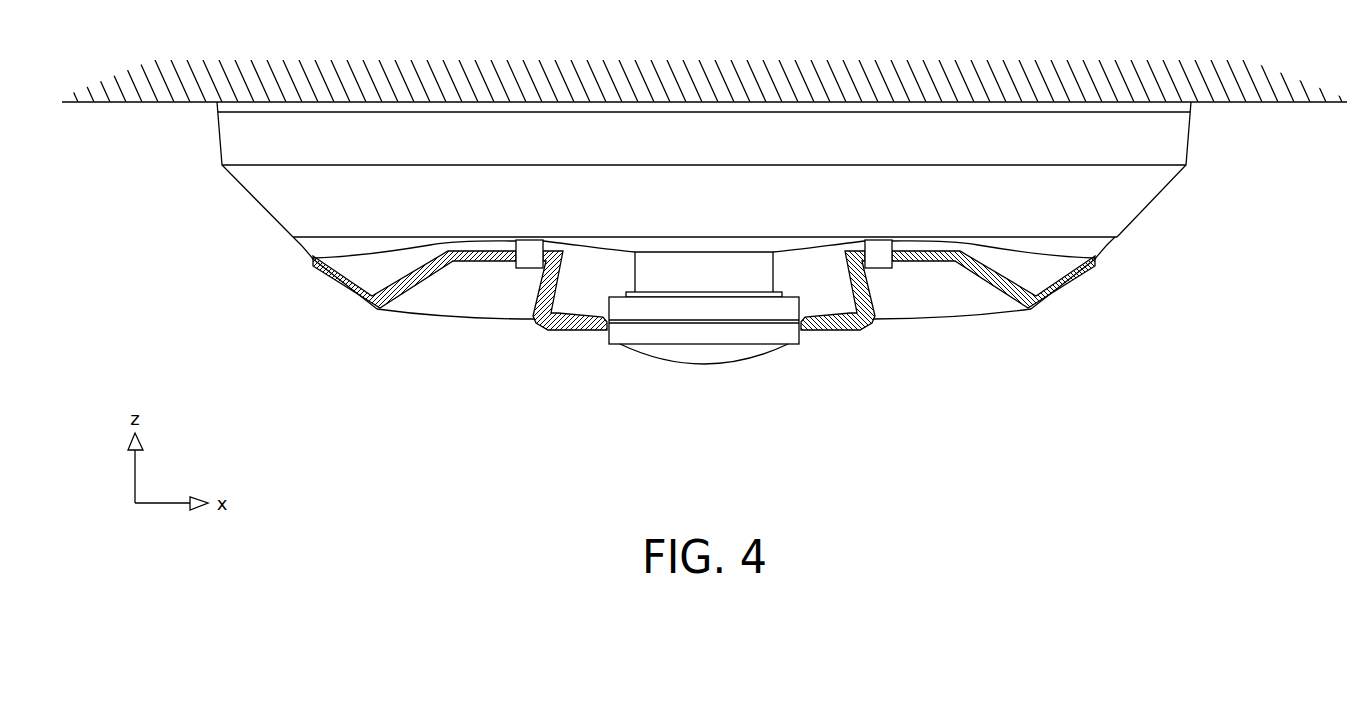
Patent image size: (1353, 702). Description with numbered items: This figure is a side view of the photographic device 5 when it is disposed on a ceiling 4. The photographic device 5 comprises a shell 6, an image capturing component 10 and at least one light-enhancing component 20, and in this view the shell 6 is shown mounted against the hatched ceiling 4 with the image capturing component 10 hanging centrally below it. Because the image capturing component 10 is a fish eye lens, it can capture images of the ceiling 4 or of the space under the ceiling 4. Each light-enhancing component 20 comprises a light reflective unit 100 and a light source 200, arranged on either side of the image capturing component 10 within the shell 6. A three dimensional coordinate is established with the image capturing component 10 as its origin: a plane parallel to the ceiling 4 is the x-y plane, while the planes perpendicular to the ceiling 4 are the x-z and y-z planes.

The ceiling 4 is at (1243, 88).
The photographic device 5 is at (253, 230).
The shell 6 is at (1142, 210).
The image capturing component 10 is at (703, 330).
The light-enhancing component 20 is at (452, 340).
The light reflective unit 100 is at (1016, 276).
The light source 200 is at (878, 258).